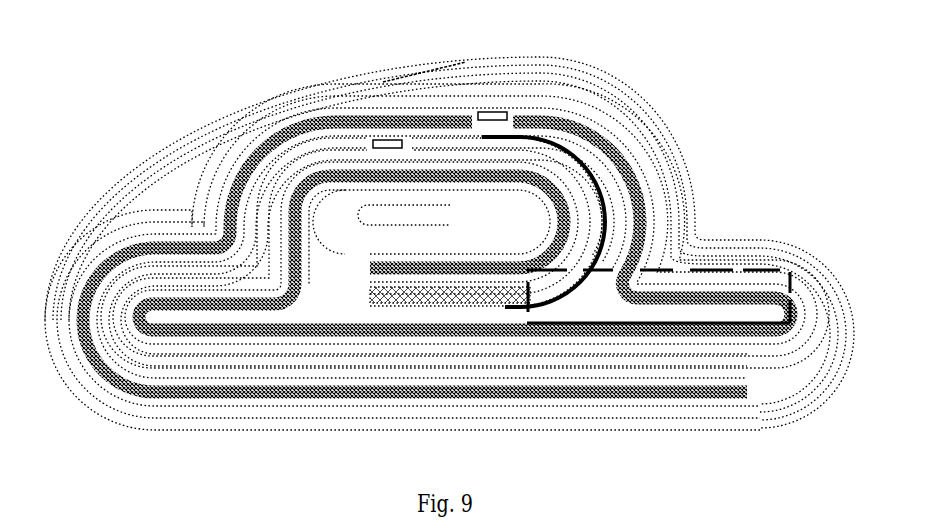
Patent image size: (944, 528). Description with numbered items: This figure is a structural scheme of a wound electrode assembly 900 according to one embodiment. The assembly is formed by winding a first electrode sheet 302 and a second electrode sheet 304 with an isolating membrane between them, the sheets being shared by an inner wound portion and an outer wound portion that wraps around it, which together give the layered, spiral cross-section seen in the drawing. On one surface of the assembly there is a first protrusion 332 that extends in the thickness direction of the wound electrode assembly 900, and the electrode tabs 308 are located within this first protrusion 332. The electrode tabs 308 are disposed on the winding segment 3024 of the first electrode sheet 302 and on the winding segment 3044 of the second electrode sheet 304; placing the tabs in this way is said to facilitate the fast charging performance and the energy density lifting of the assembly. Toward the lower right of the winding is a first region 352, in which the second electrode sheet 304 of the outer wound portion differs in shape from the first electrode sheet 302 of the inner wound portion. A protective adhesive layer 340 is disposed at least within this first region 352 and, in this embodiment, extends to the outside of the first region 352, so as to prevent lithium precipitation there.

The wound electrode assembly 900 is at (142, 45).
The first protrusion 332 is at (207, 152).
The winding segment of the second electrode sheet 3044 is at (332, 118).
The winding segment of the first electrode sheet 3024 is at (312, 163).
The electrode tabs 308 is at (382, 140).
The first electrode sheet 302 is at (577, 172).
The second electrode sheet 304 is at (640, 203).
The protective adhesive layer 340 is at (570, 300).
The first region 352 is at (700, 268).